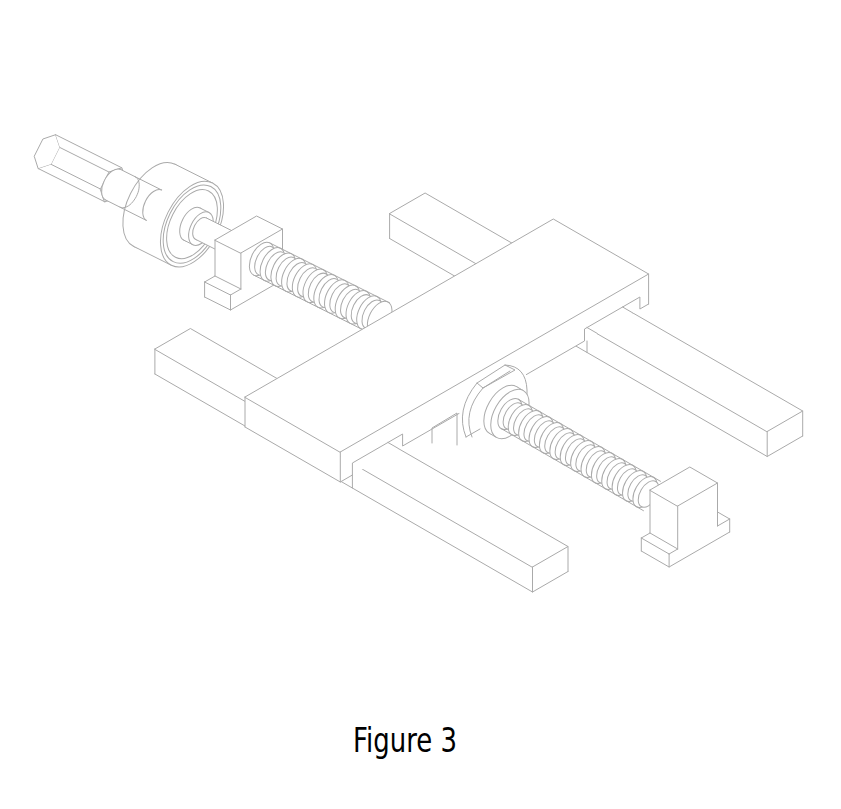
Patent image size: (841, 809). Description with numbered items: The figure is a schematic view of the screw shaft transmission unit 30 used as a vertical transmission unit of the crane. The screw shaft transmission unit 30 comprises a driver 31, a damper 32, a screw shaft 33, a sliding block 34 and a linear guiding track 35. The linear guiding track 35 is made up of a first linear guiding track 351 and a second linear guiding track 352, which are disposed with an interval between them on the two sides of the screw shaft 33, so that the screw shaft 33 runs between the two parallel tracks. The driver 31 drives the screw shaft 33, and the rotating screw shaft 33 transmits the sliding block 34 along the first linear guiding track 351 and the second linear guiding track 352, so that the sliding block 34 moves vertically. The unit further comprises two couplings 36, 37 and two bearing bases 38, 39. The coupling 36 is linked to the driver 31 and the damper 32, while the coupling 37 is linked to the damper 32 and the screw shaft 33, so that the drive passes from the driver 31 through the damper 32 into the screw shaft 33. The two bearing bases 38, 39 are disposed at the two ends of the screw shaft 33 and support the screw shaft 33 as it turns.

The screw shaft transmission unit 30 is at (418, 338).
The driver 31 is at (100, 152).
The damper 32 is at (165, 185).
The screw shaft 33 is at (320, 290).
The sliding block 34 is at (592, 270).
The linear guiding track 35 is at (479, 416).
The first linear guiding track 351 is at (402, 466).
The second linear guiding track 352 is at (778, 443).
The coupling 36 is at (125, 183).
The coupling 37 is at (202, 238).
The bearing base 38 is at (257, 230).
The bearing base 39 is at (667, 517).